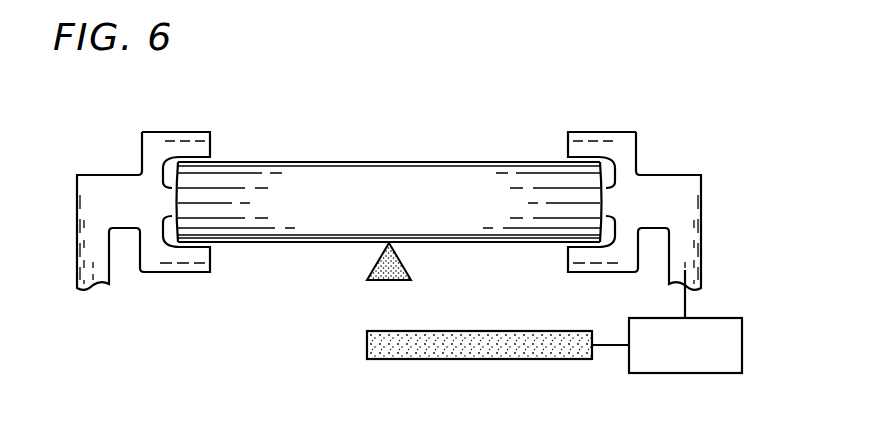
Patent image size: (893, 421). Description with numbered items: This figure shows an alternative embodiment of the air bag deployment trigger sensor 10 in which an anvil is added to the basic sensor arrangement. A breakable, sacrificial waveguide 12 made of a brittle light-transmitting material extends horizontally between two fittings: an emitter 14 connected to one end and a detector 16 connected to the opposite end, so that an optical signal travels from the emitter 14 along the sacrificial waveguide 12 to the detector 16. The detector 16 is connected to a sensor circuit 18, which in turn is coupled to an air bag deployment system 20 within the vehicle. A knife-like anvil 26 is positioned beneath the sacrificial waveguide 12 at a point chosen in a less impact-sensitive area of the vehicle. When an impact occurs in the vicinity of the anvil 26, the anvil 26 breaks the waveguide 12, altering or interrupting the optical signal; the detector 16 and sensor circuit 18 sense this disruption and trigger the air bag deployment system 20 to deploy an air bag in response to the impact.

The air bag deployment trigger sensor 10 is at (320, 91).
The sacrificial waveguide 12 is at (287, 162).
The emitter 14 is at (157, 147).
The detector 16 is at (618, 142).
The sensor circuit 18 is at (742, 343).
The air bag deployment system 20 is at (367, 342).
The anvil 26 is at (403, 270).